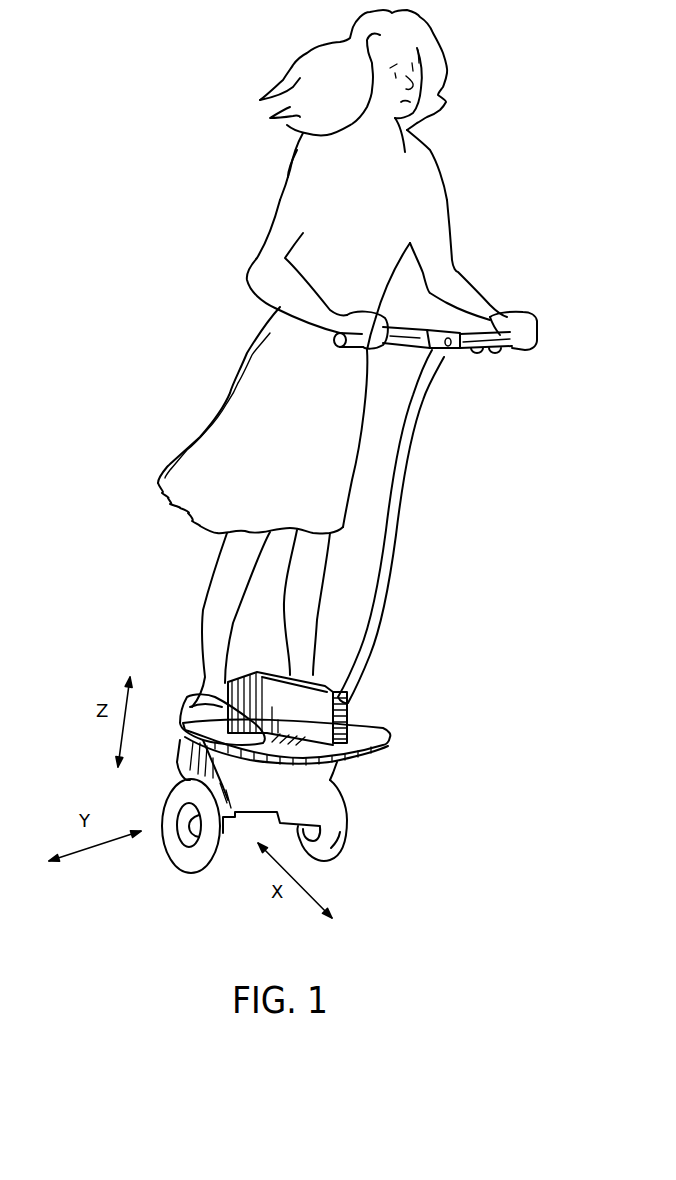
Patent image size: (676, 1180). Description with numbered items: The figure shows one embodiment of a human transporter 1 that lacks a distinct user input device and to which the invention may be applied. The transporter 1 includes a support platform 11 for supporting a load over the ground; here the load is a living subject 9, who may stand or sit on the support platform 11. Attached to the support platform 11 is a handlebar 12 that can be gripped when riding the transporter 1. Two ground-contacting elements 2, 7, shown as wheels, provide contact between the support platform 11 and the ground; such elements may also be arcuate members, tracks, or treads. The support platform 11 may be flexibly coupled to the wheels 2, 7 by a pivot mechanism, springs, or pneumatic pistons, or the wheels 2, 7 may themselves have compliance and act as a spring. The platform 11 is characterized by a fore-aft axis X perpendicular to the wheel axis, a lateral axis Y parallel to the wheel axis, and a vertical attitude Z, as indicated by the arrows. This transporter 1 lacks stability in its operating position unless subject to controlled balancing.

The transporter 1 is at (312, 620).
The ground-contacting element 2 is at (190, 867).
The ground-contacting element 7 is at (343, 833).
The living subject 9 is at (430, 182).
The support platform 11 is at (388, 741).
The handlebar 12 is at (452, 352).